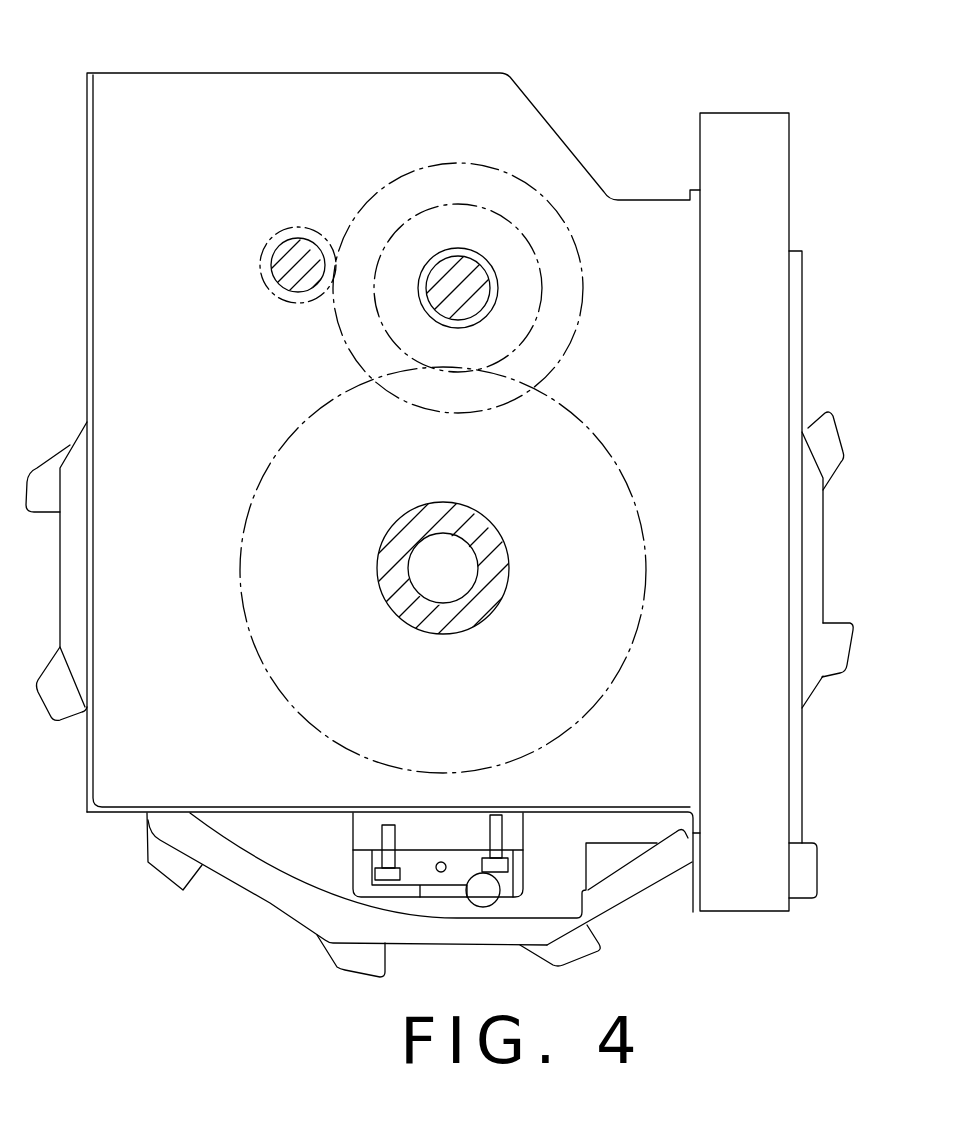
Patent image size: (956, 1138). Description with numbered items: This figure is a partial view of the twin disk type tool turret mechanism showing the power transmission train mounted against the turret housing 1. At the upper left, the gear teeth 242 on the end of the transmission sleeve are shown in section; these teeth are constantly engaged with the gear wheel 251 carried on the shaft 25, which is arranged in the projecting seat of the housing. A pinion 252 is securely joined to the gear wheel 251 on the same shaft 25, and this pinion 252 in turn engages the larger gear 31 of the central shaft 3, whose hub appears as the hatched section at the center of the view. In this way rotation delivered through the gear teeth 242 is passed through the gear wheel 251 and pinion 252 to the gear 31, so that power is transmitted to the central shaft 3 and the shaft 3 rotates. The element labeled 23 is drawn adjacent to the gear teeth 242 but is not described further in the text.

The turret housing 1 is at (652, 157).
The shaft 23 is at (309, 242).
The gear teeth 242 is at (272, 233).
The shaft 25 is at (476, 275).
The gear wheel 251 is at (455, 162).
The pinion 252 is at (483, 207).
The central shaft 3 is at (393, 592).
The gear 31 is at (270, 457).